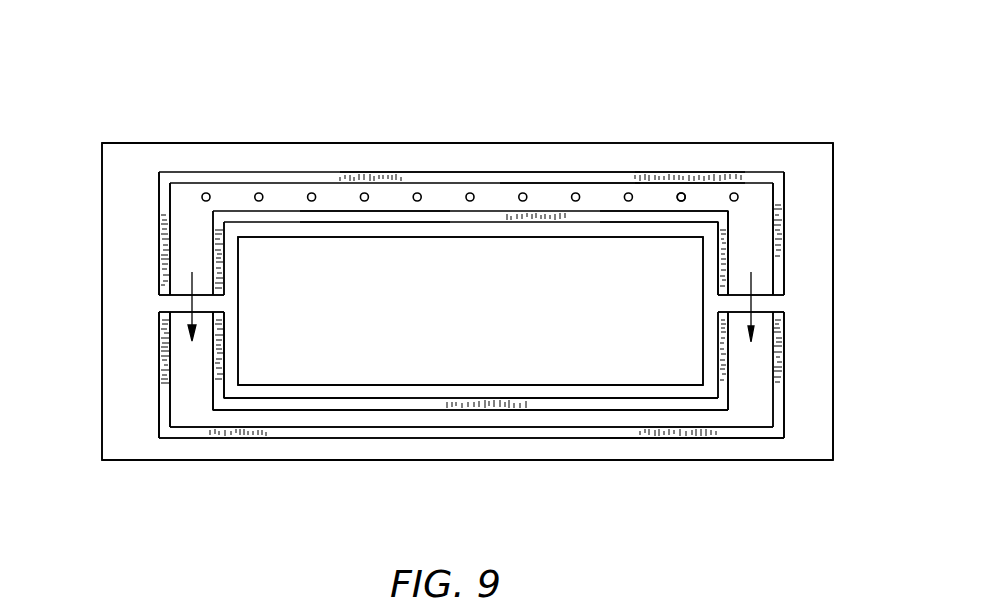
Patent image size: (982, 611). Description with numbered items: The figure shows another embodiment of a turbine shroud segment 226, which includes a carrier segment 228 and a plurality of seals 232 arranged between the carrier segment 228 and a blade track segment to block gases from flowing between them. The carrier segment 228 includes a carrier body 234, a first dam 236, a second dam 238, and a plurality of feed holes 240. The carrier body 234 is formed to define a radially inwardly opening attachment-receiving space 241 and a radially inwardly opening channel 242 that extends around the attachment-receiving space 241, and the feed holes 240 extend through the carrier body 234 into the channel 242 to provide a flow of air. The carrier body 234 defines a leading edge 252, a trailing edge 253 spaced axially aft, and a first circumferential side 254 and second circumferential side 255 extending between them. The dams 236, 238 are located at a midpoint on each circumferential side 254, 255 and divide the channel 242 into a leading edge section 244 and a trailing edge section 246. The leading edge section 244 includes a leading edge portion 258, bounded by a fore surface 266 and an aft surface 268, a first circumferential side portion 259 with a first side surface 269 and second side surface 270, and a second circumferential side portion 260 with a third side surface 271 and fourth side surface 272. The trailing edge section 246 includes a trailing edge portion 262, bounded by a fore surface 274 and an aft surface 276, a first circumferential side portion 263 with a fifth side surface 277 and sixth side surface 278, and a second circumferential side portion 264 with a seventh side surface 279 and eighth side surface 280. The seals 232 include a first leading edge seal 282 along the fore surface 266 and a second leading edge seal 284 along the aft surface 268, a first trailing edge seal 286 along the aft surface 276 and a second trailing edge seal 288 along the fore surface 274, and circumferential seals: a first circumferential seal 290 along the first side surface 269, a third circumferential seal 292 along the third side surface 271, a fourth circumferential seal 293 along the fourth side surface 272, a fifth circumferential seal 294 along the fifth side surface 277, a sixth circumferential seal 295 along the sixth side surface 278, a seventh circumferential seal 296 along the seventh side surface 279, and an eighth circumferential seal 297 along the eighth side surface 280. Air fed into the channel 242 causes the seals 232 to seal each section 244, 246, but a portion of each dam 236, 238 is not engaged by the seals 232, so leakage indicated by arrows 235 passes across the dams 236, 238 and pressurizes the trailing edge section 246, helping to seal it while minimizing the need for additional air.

The turbine shroud segment 226 is at (120, 88).
The carrier segment 228 is at (216, 105).
The plurality of seals 232 is at (140, 132).
The carrier body 234 is at (309, 130).
The leading edge 252 is at (466, 128).
The first leading edge seal 282 is at (418, 150).
The second leading edge seal 284 is at (383, 195).
The leading edge portion 258 is at (498, 182).
The leading edge section 244 is at (568, 150).
The fore surface 266 is at (633, 172).
The feed holes 240 is at (685, 185).
The aft surface 268 is at (697, 226).
The fourth side surface 272 is at (709, 238).
The channel 242 is at (822, 142).
The third circumferential seal 292 is at (797, 183).
The second circumferential side portion 260 is at (762, 224).
The second circumferential side 255 is at (785, 245).
The third side surface 271 is at (850, 200).
The second dam 238 is at (800, 297).
The arrows 235 is at (752, 298).
The seventh circumferential seal 296 is at (800, 349).
The seventh side surface 279 is at (784, 368).
The fourth circumferential seal 293 is at (704, 274).
The eighth circumferential seal 297 is at (703, 348).
The attachment-receiving space 241 is at (495, 322).
The second trailing edge seal 288 is at (497, 378).
The first trailing edge seal 286 is at (520, 404).
The sixth circumferential seal 295 is at (240, 337).
The first circumferential seal 290 is at (235, 272).
The first circumferential side portion 259 is at (175, 216).
The second side surface 270 is at (218, 249).
The first circumferential side 254 is at (88, 270).
The first side surface 269 is at (143, 288).
The first dam 236 is at (143, 349).
The fifth circumferential seal 294 is at (158, 357).
The fifth side surface 277 is at (161, 372).
The first circumferential side portion 263 is at (168, 398).
The sixth side surface 278 is at (222, 382).
The trailing edge section 246 is at (295, 478).
The trailing edge portion 262 is at (368, 436).
The trailing edge 253 is at (383, 478).
The aft surface 276 is at (634, 440).
The fore surface 274 is at (708, 400).
The eighth side surface 280 is at (730, 412).
The second circumferential side portion 264 is at (761, 398).